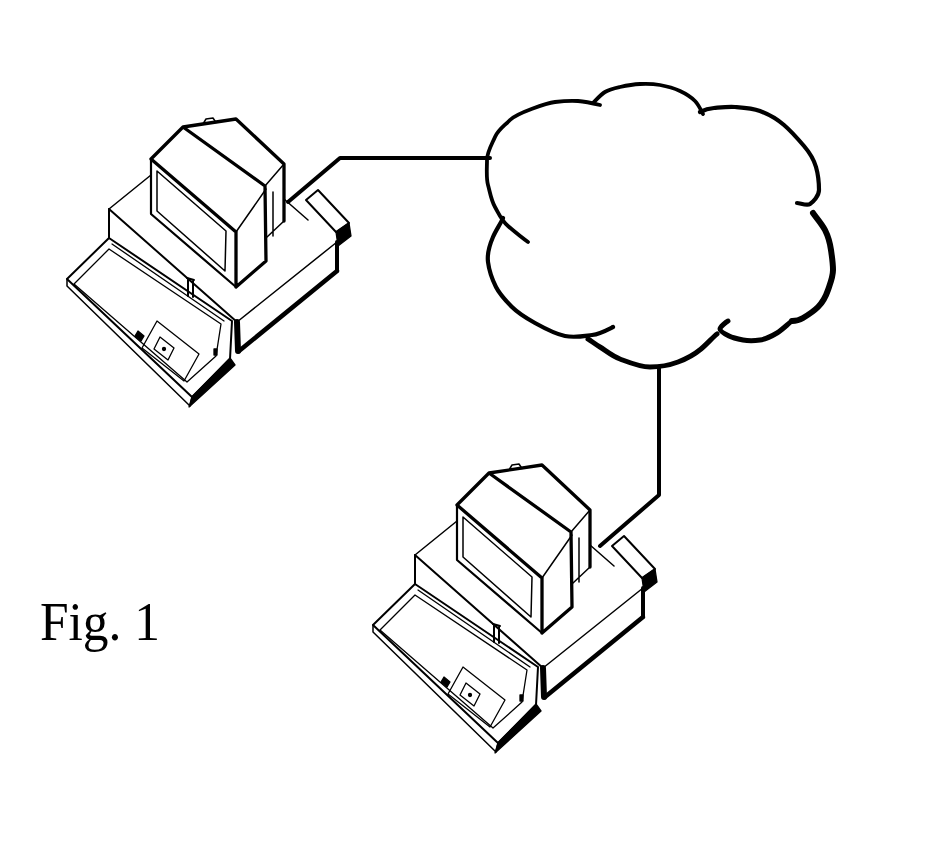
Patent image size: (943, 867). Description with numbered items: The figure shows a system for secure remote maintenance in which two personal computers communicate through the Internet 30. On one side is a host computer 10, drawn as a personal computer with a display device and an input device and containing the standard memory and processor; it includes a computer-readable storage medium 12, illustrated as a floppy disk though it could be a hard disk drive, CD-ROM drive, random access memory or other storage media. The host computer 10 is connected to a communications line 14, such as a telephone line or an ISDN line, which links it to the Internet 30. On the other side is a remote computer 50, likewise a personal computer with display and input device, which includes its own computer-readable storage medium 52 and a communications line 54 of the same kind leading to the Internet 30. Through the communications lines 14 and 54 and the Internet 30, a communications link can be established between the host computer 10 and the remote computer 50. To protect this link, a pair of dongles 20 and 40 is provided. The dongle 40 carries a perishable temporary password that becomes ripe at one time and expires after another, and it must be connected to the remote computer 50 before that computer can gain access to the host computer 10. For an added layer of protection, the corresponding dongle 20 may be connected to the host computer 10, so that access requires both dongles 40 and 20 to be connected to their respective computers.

The host computer 10 is at (183, 126).
The computer-readable storage medium 12 is at (239, 356).
The communications line 14 is at (365, 157).
The dongle 20 is at (346, 230).
The Internet 30 is at (598, 93).
The dongle 40 is at (652, 560).
The remote computer 50 is at (617, 644).
The computer-readable storage medium 52 is at (545, 697).
The communications line 54 is at (659, 475).